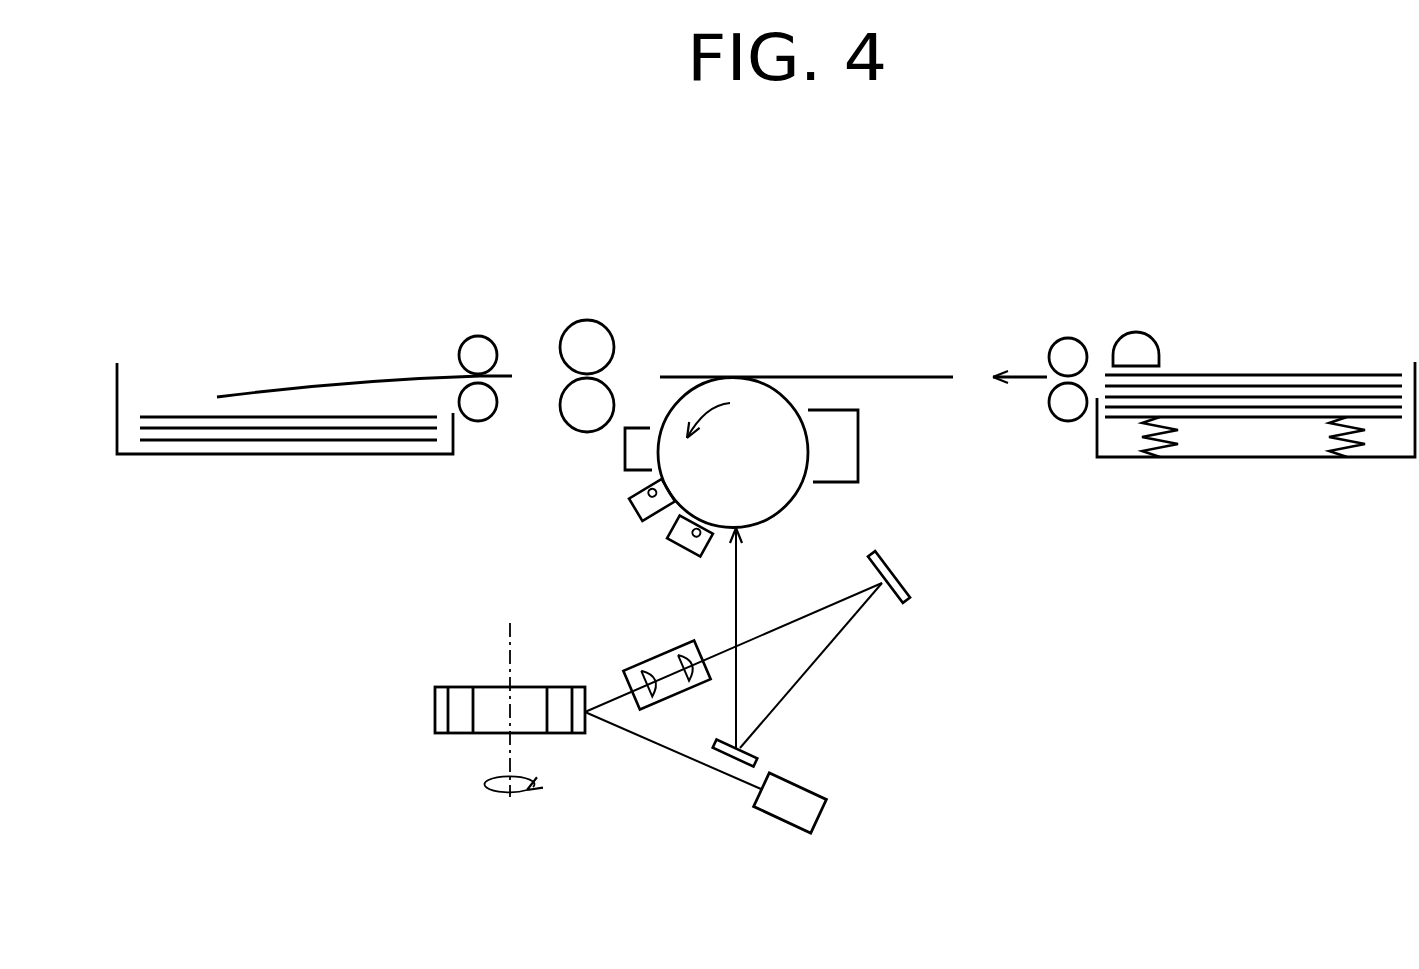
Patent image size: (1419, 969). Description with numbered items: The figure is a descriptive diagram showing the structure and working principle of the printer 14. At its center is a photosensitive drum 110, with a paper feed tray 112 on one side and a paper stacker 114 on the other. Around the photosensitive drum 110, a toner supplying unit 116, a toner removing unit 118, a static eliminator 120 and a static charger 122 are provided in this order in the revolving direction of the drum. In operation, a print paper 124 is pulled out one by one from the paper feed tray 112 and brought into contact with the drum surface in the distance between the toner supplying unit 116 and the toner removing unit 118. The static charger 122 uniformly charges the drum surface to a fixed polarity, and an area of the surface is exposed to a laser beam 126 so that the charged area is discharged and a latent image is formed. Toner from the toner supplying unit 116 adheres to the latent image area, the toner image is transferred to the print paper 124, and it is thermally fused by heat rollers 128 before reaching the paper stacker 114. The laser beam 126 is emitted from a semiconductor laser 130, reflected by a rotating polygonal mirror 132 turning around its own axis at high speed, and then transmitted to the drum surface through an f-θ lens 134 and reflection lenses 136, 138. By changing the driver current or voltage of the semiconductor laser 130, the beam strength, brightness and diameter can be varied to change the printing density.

The printer 14 is at (1000, 312).
The photosensitive drum 110 is at (797, 498).
The paper feed tray 112 is at (1262, 460).
The paper stacker 114 is at (230, 455).
The toner supplying unit 116 is at (858, 448).
The toner removing unit 118 is at (625, 448).
The static eliminator 120 is at (640, 508).
The static charger 122 is at (678, 548).
The print paper 124 is at (927, 375).
The laser beam 126 is at (737, 603).
The heat rollers 128 is at (558, 400).
The semiconductor laser 130 is at (818, 793).
The polygonal mirror 132 is at (435, 717).
The f-θ lens 134 is at (668, 648).
The reflection lens 136 is at (905, 586).
The reflection lens 138 is at (753, 750).